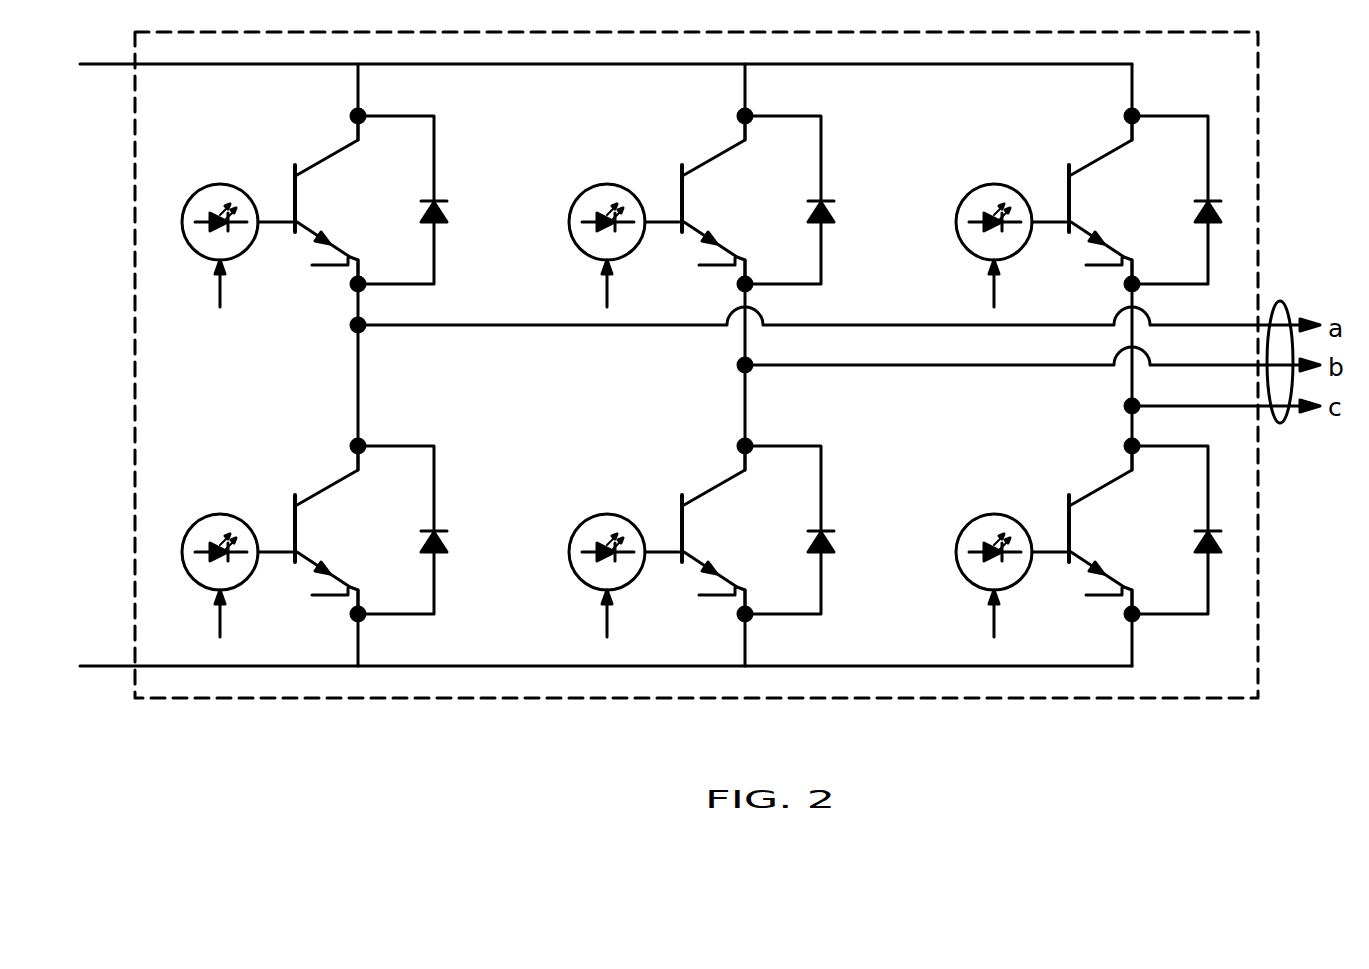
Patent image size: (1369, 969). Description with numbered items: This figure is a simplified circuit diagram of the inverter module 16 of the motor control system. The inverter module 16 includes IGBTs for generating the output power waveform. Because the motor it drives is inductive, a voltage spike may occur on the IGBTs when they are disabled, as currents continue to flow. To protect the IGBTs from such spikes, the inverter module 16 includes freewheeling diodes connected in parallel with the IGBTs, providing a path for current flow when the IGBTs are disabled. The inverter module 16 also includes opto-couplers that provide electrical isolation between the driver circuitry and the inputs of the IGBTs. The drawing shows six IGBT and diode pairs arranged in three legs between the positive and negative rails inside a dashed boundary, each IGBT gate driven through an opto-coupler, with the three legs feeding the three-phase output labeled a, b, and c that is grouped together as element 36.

The inverter module 16 is at (205, 742).
The three-phase output 36 is at (1288, 308).